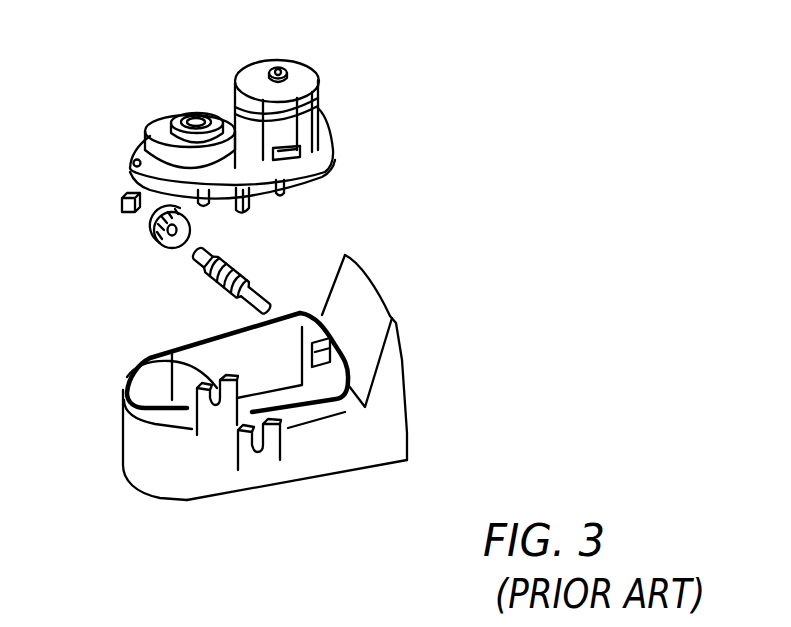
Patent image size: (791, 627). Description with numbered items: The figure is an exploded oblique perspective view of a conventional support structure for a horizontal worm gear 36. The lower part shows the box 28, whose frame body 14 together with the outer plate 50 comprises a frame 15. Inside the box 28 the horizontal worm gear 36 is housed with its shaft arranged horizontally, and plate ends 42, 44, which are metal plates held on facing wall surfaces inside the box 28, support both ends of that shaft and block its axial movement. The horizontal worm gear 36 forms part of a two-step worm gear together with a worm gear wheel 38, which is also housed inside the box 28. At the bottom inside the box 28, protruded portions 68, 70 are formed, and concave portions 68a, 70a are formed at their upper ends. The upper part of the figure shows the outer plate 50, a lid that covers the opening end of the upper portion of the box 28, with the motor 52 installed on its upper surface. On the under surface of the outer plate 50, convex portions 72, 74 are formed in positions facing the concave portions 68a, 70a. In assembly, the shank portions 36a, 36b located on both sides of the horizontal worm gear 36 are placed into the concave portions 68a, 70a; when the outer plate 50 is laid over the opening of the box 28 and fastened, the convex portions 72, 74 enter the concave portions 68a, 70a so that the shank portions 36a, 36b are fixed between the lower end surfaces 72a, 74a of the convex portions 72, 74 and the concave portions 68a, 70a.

The frame body 14 is at (324, 377).
The frame 15 is at (330, 148).
The box 28 is at (152, 380).
The horizontal worm gear 36 is at (206, 311).
The shank portion 36a is at (203, 262).
The shank portion 36b is at (248, 300).
The worm gear wheel 38 is at (152, 240).
The plate end 42 is at (121, 210).
The plate end 44 is at (335, 347).
The outer plate 50 is at (237, 167).
The motor 52 is at (303, 73).
The protruded portion 68 is at (207, 447).
The concave portion 68a is at (158, 366).
The protruded portion 70 is at (337, 495).
The concave portion 70a is at (280, 450).
The convex portion 72 is at (135, 152).
The lower end surface 72a is at (205, 208).
The convex portion 74 is at (300, 198).
The lower end surface 74a is at (252, 206).